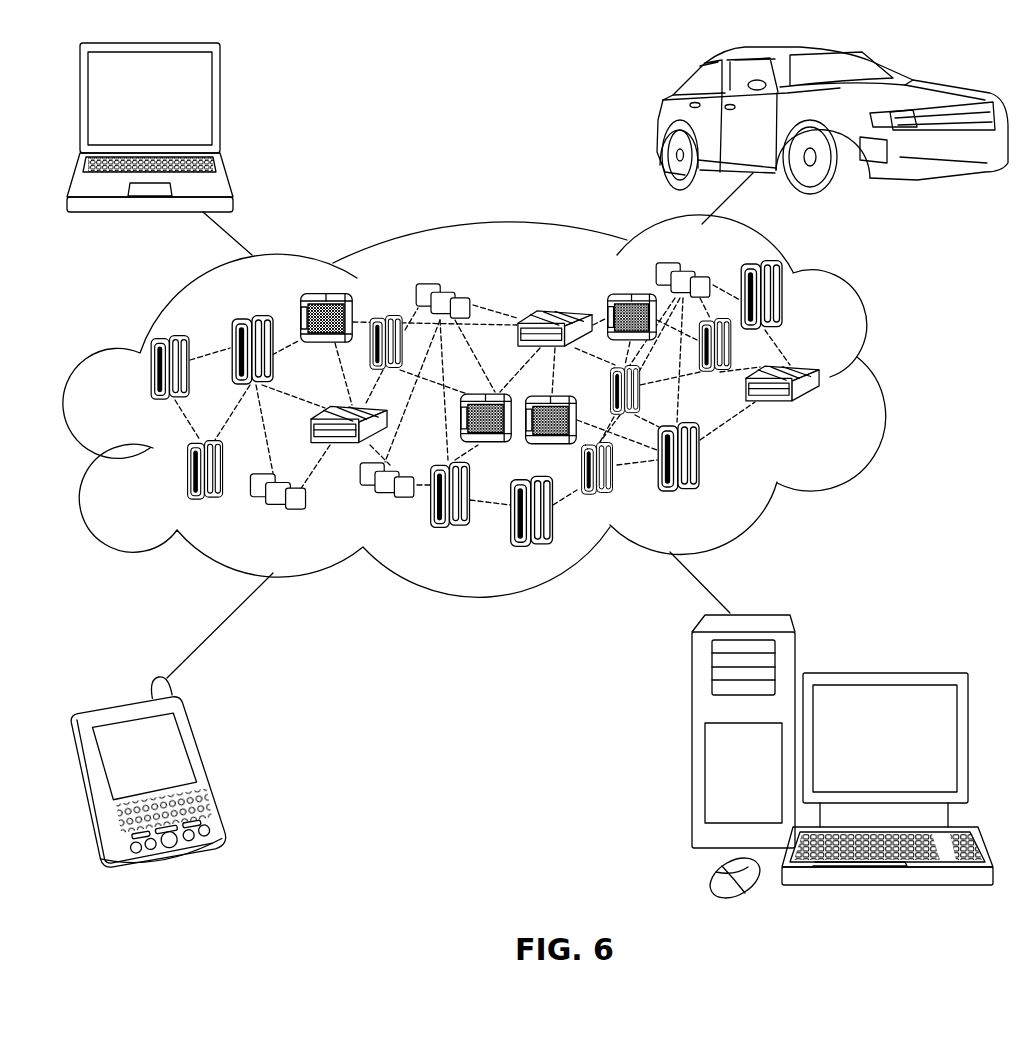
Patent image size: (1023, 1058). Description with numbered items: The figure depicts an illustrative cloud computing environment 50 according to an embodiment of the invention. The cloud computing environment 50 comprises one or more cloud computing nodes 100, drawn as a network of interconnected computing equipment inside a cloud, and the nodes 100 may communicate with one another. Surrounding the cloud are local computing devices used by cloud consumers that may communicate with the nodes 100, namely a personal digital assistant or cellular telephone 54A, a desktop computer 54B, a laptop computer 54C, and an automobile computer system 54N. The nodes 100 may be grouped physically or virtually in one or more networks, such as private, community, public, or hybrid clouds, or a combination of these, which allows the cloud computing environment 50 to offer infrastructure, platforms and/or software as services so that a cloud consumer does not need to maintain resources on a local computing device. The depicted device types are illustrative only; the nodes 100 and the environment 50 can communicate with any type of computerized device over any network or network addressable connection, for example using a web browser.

The cloud computing environment 50 is at (883, 382).
The cloud computing nodes 100 is at (832, 417).
The personal digital assistant or cellular telephone 54A is at (210, 770).
The desktop computer 54B is at (882, 672).
The laptop computer 54C is at (223, 107).
The automobile computer system 54N is at (662, 120).